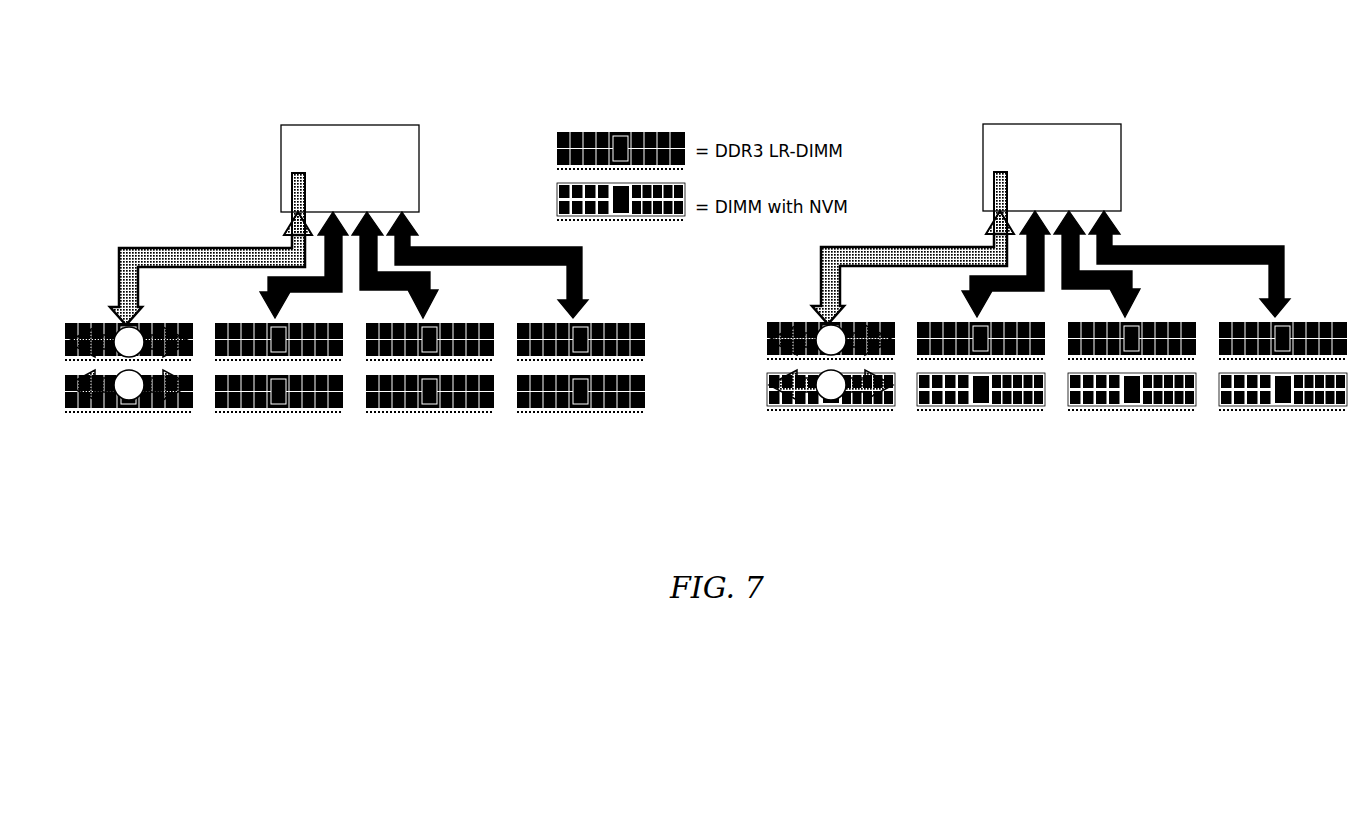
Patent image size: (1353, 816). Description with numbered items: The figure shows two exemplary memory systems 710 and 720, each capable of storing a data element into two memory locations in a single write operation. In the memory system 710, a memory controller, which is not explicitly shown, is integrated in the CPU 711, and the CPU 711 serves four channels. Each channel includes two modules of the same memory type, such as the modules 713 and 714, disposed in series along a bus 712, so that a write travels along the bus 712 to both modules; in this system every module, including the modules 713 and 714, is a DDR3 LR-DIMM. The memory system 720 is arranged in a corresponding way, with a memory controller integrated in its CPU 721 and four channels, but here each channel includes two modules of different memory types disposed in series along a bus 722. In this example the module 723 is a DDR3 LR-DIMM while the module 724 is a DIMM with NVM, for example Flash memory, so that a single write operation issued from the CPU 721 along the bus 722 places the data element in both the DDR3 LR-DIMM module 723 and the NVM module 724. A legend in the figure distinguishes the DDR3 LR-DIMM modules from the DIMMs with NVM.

The memory system 710 is at (363, 52).
The CPU 711 is at (289, 143).
The bus 712 is at (155, 248).
The module 713 is at (189, 322).
The module 714 is at (180, 411).
The memory system 720 is at (1053, 67).
The CPU 721 is at (1019, 162).
The bus 722 is at (913, 248).
The module 723 is at (790, 326).
The module 724 is at (790, 386).